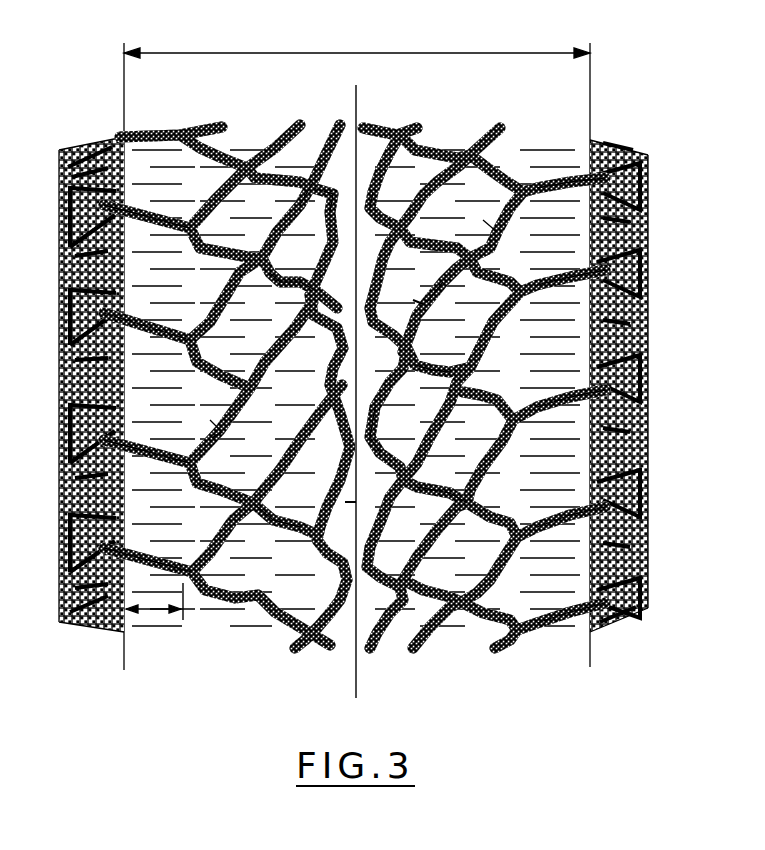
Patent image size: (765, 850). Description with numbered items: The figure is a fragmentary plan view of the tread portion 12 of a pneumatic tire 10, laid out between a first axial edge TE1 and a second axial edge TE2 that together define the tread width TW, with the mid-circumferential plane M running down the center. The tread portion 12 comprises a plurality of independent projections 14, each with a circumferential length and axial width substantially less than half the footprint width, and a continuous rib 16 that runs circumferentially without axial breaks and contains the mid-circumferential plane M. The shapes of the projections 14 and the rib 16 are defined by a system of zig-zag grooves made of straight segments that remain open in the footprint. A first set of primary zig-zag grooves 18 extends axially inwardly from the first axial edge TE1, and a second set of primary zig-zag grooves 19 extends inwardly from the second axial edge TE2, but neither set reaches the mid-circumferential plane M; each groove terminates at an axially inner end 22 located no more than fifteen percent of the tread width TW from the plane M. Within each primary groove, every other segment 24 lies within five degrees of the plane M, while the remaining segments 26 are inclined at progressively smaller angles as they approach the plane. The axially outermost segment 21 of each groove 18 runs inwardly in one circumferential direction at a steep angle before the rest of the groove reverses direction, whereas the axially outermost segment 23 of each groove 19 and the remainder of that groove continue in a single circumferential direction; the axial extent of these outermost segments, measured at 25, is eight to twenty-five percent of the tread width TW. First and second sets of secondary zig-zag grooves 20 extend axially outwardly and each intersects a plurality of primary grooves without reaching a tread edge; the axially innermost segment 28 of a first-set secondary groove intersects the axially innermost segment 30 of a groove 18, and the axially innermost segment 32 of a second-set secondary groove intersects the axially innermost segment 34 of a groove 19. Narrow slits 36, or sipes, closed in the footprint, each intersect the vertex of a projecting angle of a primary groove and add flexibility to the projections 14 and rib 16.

The pneumatic tire 10 is at (96, 632).
The tread portion 12 is at (498, 660).
The independent projections 14 is at (234, 358).
The continuous rib 16 is at (380, 130).
The first set of primary zig-zag grooves 18 is at (318, 272).
The second set of primary zig-zag grooves 19 is at (447, 277).
The secondary zig-zag grooves 20 is at (305, 292).
The axially outermost segment 21 is at (140, 324).
The axially inner end 22 is at (375, 197).
The axially outermost segment 23 is at (575, 288).
The every other segment 24 is at (212, 418).
The axial distance of outermost segment 25 is at (150, 610).
The remaining segments 26 is at (214, 436).
The axially innermost segment of first secondary groove 28 is at (316, 216).
The axially innermost segment of first primary groove 30 is at (350, 218).
The axially innermost segment of second secondary groove 32 is at (385, 440).
The axially innermost segment of second primary groove 34 is at (380, 425).
The narrow slits 36 is at (215, 432).
The first axial edge of the tread TE1 is at (124, 98).
The second axial edge of the tread TE2 is at (590, 97).
The tread width TW is at (378, 53).
The mid-circumferential plane M is at (354, 104).